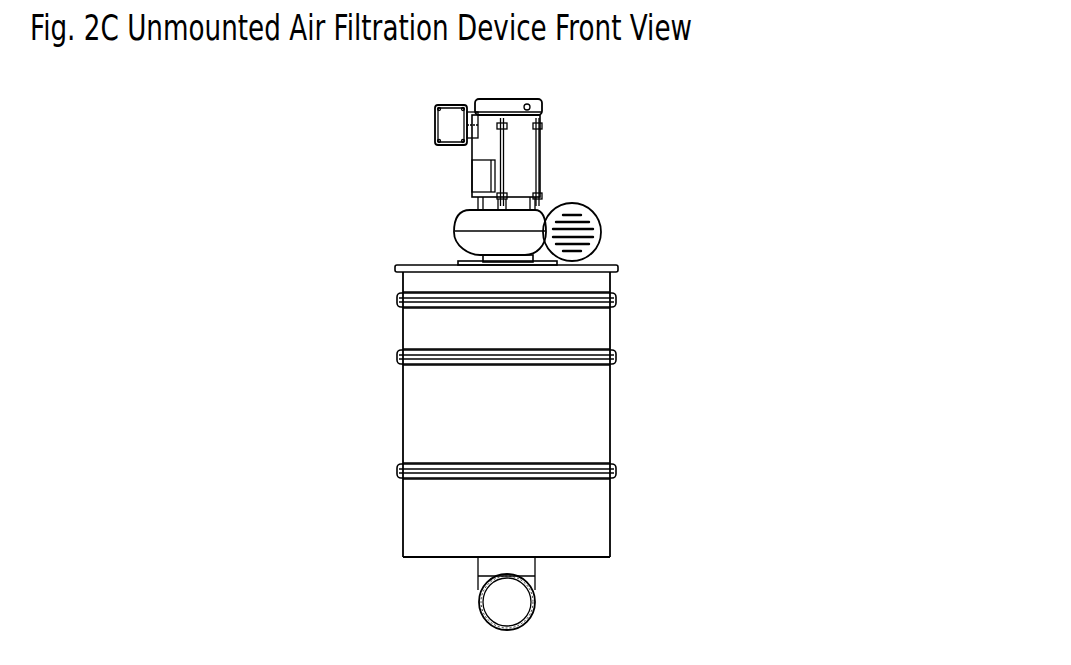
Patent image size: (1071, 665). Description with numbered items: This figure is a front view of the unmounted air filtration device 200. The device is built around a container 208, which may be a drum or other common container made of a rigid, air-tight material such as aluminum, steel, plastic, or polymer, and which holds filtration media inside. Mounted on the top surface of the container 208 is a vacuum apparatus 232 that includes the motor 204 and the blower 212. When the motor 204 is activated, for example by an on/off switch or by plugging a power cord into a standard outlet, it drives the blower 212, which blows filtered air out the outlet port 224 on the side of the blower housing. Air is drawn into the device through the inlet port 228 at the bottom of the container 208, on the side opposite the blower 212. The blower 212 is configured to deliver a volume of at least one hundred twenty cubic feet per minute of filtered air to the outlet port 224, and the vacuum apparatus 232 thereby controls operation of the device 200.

The unmounted air filtration device 200 is at (881, 55).
The motor 204 is at (527, 148).
The container 208 is at (418, 432).
The blower 212 is at (510, 220).
The outlet port 224 is at (585, 243).
The inlet port 228 is at (505, 603).
The vacuum apparatus 232 is at (400, 103).